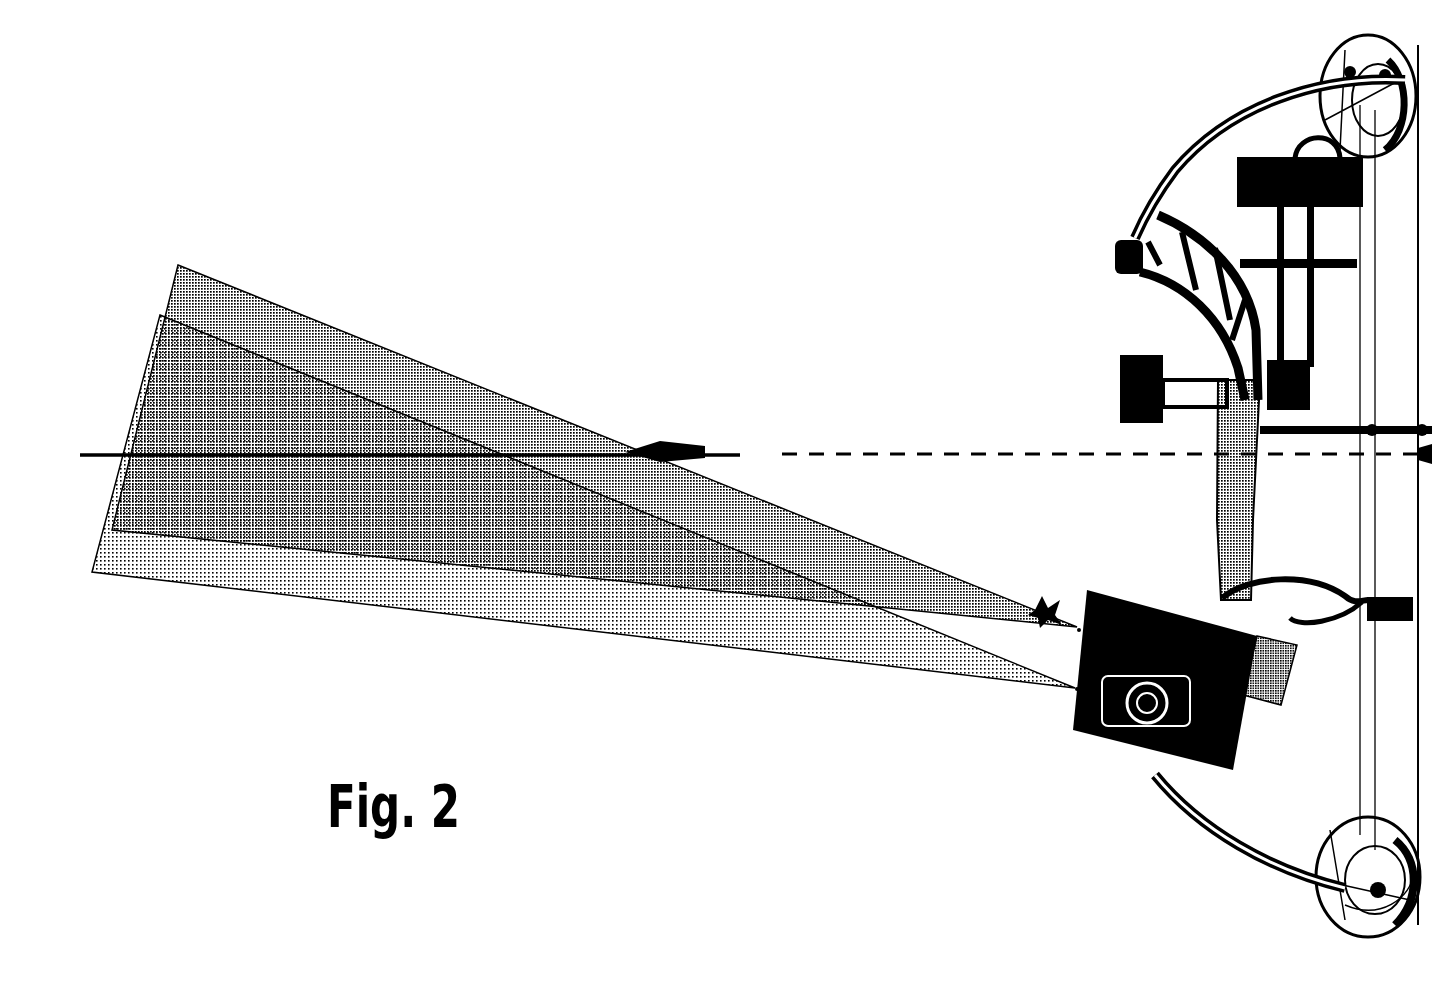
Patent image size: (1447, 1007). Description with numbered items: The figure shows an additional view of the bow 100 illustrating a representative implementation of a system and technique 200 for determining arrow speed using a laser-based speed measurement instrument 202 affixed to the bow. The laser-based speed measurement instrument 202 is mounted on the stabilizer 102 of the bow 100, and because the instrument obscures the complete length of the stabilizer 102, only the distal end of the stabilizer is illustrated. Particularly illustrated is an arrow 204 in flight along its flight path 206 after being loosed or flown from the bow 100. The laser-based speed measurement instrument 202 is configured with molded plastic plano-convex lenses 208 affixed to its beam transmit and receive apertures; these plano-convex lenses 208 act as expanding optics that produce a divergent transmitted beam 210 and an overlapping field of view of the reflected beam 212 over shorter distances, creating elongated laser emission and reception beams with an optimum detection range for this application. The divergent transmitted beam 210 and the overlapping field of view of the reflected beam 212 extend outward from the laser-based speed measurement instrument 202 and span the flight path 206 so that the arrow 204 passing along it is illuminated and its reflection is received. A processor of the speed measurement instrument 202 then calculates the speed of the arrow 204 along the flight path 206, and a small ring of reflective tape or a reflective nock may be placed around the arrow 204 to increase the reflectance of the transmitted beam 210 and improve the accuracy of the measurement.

The bow 100 is at (1115, 168).
The stabilizer 102 is at (1040, 582).
The system and technique 200 is at (809, 791).
The laser-based speed measurement instrument 202 is at (1100, 778).
The arrow 204 is at (665, 422).
The flight path 206 is at (872, 416).
The plano-convex lenses 208 is at (1066, 636).
The divergent transmitted beam 210 is at (452, 352).
The overlapping field of view of the reflected beam 212 is at (458, 640).